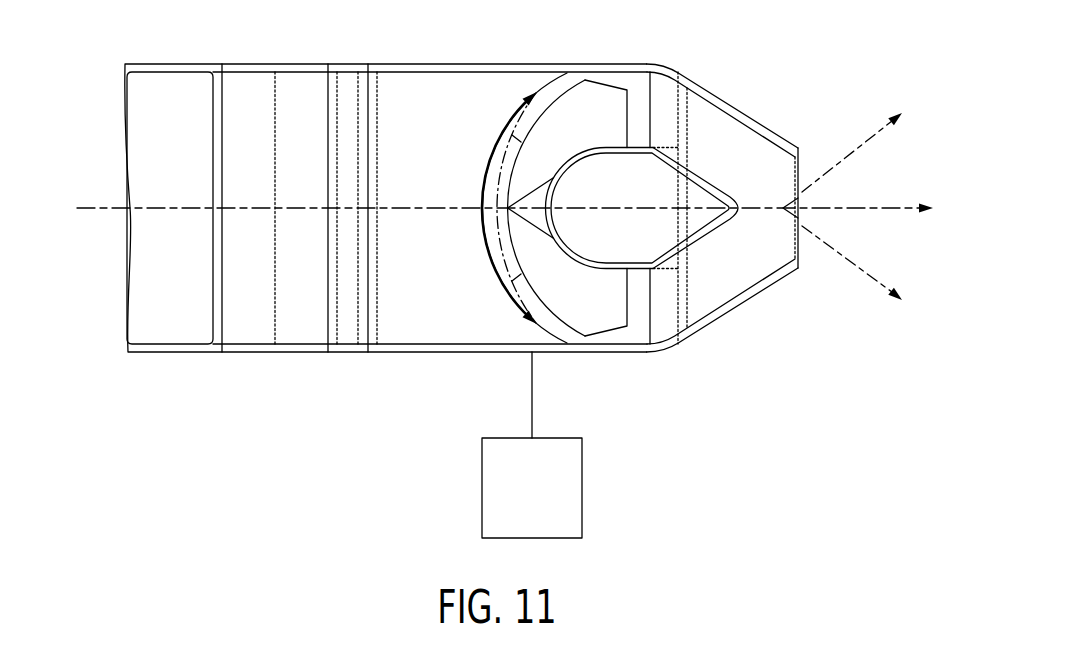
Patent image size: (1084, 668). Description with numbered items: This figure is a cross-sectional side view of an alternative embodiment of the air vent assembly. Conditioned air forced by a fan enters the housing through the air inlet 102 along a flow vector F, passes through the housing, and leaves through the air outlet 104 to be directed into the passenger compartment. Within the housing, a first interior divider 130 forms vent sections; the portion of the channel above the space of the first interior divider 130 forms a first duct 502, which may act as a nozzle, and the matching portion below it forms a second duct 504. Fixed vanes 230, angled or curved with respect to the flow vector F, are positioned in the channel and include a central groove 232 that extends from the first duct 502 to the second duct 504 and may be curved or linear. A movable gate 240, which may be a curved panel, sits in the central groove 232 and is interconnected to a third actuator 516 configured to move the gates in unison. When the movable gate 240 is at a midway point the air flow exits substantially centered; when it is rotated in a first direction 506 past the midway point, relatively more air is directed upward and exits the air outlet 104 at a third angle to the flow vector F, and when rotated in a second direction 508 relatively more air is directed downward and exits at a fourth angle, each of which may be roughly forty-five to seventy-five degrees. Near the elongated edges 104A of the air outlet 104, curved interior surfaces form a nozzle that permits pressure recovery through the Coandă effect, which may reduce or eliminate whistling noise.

The air inlet 102 is at (145, 158).
The air outlet 104 is at (798, 245).
The elongated edges 104A is at (783, 140).
The first interior divider 130 is at (619, 246).
The fixed vanes 230 is at (463, 87).
The central groove 232 is at (538, 113).
The movable gate 240 is at (515, 262).
The first duct 502 is at (657, 124).
The second duct 504 is at (657, 317).
The first direction 506 is at (420, 171).
The second direction 508 is at (420, 312).
The third actuator 516 is at (519, 503).
The flow vector F is at (497, 210).